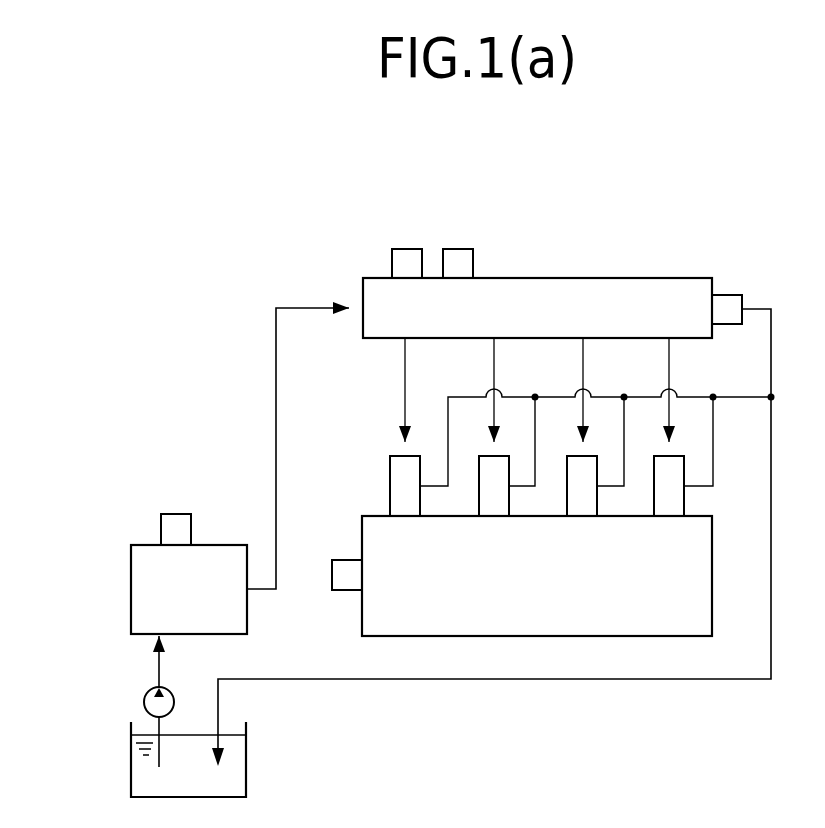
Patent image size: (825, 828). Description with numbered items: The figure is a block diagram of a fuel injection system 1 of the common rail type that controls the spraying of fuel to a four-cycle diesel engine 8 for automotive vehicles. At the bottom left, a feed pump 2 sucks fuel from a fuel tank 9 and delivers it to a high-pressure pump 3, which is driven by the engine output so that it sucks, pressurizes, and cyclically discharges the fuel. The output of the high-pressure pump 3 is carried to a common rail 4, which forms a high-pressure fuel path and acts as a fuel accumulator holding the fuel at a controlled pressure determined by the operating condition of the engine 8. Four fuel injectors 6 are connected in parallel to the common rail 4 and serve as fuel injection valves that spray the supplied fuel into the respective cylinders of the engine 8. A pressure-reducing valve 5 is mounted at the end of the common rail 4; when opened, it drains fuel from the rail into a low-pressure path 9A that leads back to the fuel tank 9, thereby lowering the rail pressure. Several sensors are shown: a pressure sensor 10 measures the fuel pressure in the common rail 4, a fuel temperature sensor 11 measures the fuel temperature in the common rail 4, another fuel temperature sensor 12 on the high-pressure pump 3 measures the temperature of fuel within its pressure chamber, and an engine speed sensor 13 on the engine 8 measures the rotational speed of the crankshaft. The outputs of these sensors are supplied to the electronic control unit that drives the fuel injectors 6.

The fuel injection system 1 is at (657, 186).
The feed pump 2 is at (172, 692).
The high-pressure pump 3 is at (128, 587).
The common rail 4 is at (644, 278).
The pressure-reducing valve 5 is at (729, 295).
The fuel injectors 6 is at (415, 455).
The diesel engine 8 is at (712, 568).
The fuel tank 9 is at (247, 752).
The low-pressure path 9A is at (652, 682).
The pressure sensor 10 is at (466, 248).
The fuel temperature sensor 11 is at (410, 248).
The fuel temperature sensor 12 is at (177, 513).
The engine speed sensor 13 is at (339, 558).